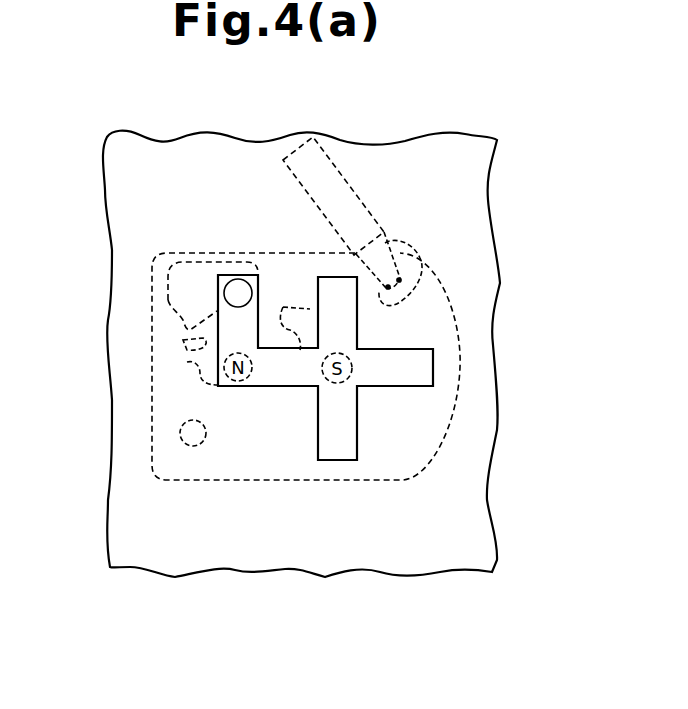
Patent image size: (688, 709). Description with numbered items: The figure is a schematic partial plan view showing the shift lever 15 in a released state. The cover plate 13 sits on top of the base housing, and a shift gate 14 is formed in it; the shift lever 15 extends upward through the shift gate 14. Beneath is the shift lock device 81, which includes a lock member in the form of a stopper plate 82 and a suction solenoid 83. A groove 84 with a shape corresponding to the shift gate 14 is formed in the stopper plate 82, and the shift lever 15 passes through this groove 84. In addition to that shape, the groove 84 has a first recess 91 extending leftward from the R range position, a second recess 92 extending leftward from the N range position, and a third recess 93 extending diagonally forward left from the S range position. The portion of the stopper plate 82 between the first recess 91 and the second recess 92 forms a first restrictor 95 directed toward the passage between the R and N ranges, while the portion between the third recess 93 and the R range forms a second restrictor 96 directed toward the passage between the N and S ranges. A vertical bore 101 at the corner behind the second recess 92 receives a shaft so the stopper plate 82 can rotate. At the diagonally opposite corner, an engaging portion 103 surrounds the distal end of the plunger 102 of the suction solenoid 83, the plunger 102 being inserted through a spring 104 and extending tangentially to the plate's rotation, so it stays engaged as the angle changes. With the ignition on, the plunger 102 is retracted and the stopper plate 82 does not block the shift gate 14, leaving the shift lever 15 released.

The cover plate 13 is at (105, 167).
The shift gate 14 is at (320, 320).
The shift lever 15 is at (258, 275).
The shift lock device 81 is at (145, 243).
The stopper plate 82 is at (284, 486).
The suction solenoid 83 is at (336, 160).
The groove 84 is at (188, 328).
The first recess 91 is at (198, 257).
The second recess 92 is at (187, 362).
The third recess 93 is at (283, 307).
The first restrictor 95 is at (183, 351).
The second restrictor 96 is at (298, 352).
The bore 101 is at (189, 446).
The plunger 102 is at (393, 243).
The engaging portion 103 is at (447, 255).
The spring 104 is at (413, 250).